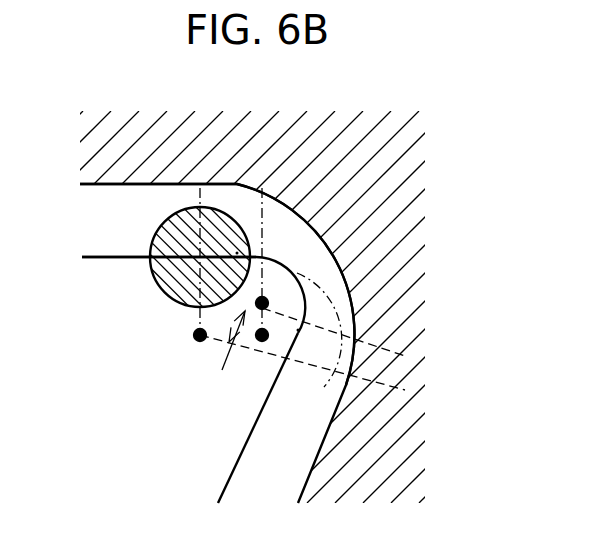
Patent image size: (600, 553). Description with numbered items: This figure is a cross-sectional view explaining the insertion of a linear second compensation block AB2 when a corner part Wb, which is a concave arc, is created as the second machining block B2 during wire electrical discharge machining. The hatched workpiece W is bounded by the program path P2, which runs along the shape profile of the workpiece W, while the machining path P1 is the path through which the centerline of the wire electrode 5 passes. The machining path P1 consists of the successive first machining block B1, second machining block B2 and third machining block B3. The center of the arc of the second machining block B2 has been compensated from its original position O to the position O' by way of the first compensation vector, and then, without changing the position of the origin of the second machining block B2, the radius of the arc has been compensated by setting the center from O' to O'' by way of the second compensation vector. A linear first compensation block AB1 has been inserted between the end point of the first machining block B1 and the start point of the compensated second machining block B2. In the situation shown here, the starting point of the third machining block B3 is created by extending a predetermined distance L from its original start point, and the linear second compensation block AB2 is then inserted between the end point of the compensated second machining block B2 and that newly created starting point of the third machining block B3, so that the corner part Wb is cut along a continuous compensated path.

The workpiece W is at (425, 268).
The corner part Wb is at (312, 244).
The program path P2 is at (114, 187).
The machining path P1 is at (92, 260).
The first machining block B1 is at (128, 260).
The second machining block B2 is at (308, 298).
The third machining block B3 is at (243, 437).
The wire electrode 5 is at (170, 302).
The center of the arc of the second machining block O is at (288, 289).
The compensated center of the arc O' is at (255, 288).
The radius-compensated center of the arc O'' is at (331, 317).
The predetermined distance L is at (238, 342).
The first compensation block AB1 is at (237, 253).
The second compensation block AB2 is at (297, 330).